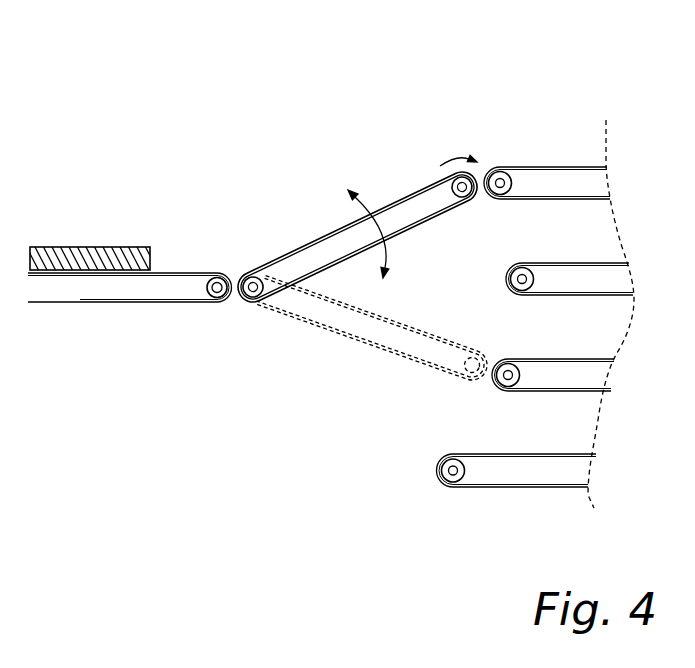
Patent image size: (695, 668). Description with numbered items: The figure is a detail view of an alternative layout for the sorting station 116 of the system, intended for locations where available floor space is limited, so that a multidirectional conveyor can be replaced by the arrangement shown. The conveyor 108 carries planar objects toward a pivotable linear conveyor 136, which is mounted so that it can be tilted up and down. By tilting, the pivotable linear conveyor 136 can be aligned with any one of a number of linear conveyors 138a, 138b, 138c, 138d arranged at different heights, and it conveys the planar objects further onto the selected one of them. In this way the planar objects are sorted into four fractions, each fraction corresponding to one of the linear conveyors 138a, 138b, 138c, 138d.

The sorting station 116 is at (352, 118).
The conveyor 108 is at (206, 271).
The pivotable linear conveyor 136 is at (298, 245).
The linear conveyor 138a is at (472, 489).
The linear conveyor 138b is at (508, 358).
The linear conveyor 138c is at (507, 280).
The linear conveyor 138d is at (537, 166).